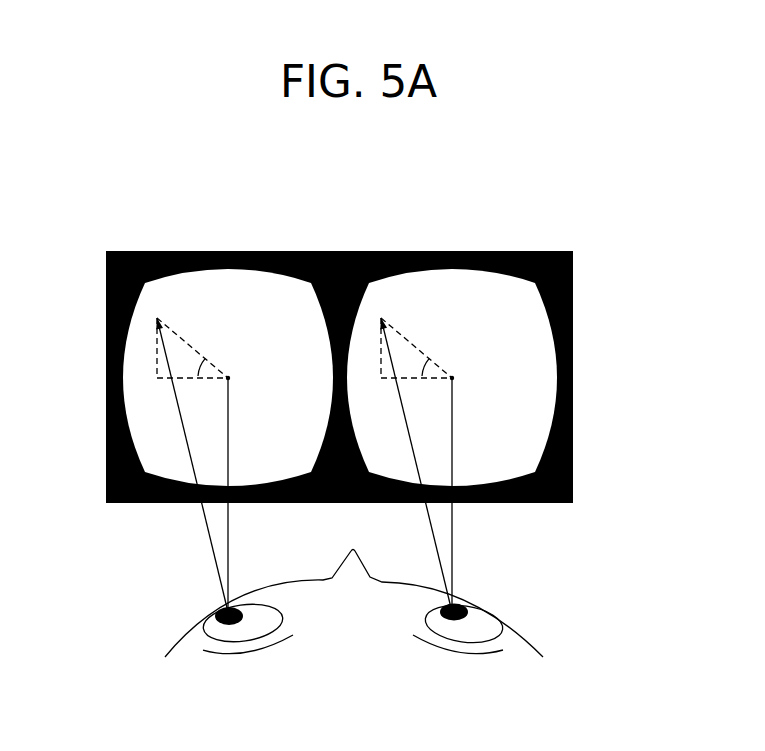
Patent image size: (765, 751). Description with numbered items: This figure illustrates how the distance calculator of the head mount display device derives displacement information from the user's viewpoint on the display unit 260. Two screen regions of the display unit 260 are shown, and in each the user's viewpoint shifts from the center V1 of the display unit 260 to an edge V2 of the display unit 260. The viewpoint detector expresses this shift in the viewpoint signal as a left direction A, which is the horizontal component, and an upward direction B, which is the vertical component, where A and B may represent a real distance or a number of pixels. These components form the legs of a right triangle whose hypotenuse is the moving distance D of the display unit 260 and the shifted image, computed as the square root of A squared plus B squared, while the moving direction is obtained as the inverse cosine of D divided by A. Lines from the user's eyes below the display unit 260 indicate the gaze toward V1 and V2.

The display unit 260 is at (602, 259).
The center of the display unit V1 is at (354, 494).
The edge of the display unit V2 is at (297, 451).
The left direction A is at (304, 398).
The upward direction B is at (253, 348).
The moving distance D is at (308, 343).